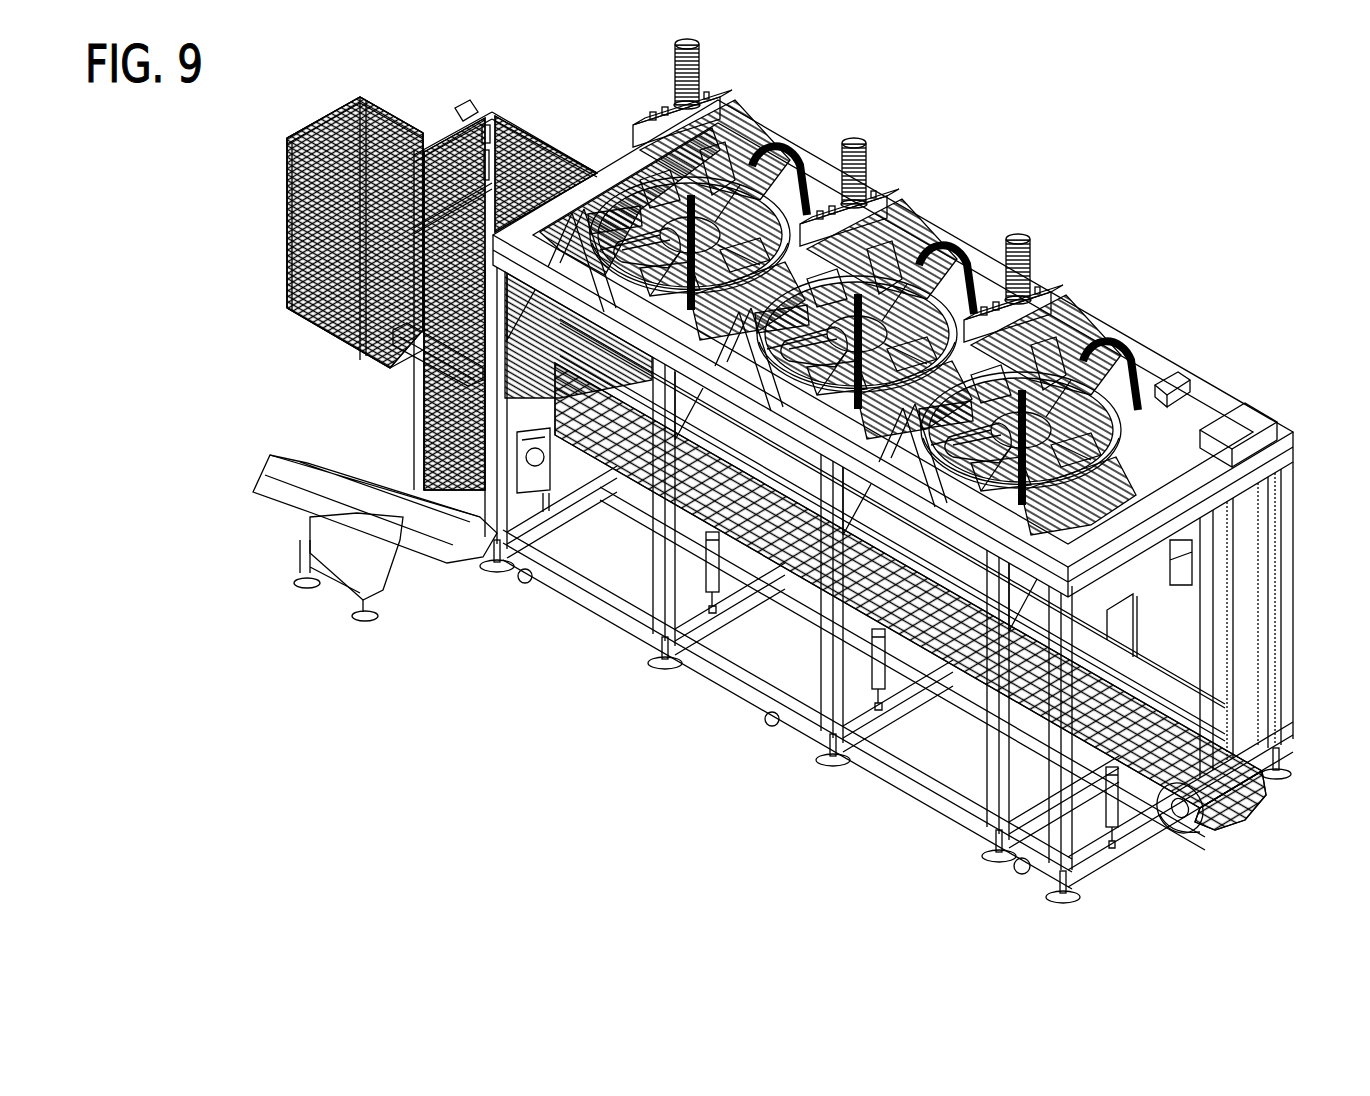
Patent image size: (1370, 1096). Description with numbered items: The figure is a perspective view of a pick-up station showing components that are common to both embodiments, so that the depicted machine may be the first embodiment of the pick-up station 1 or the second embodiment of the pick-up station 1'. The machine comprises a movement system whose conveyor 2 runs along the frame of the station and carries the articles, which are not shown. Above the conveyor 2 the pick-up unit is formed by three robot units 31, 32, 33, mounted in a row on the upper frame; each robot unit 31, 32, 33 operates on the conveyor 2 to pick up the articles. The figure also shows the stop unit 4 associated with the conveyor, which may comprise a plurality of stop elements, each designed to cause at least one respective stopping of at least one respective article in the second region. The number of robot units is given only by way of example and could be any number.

The pick-up station 1 is at (910, 501).
The pick-up station 1' is at (425, 359).
The conveyor 2 is at (1238, 690).
The stop unit 4 is at (603, 487).
The robot unit 31 is at (728, 210).
The robot unit 32 is at (902, 300).
The robot unit 33 is at (1080, 395).